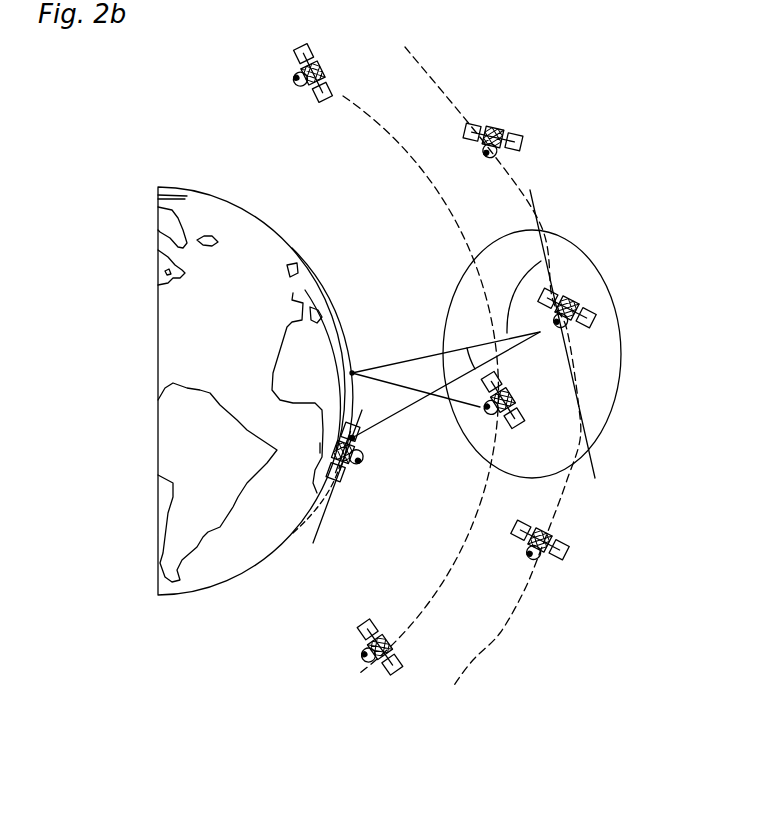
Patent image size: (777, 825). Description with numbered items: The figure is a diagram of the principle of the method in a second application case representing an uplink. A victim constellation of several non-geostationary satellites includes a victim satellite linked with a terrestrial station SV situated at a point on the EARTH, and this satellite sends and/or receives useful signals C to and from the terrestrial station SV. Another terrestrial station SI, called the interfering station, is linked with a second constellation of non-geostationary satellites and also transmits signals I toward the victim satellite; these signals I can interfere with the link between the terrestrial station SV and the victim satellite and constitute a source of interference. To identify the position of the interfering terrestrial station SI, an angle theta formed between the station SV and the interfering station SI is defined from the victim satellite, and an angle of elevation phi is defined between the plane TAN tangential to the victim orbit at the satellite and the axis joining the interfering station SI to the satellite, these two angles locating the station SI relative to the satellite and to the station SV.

The Earth EARTH is at (183, 332).
The tangential plane TAN is at (562, 328).
The interfering terrestrial station SI is at (357, 359).
The terrestrial station SV is at (366, 417).
The interfering signals I is at (446, 352).
The useful signals C is at (446, 386).